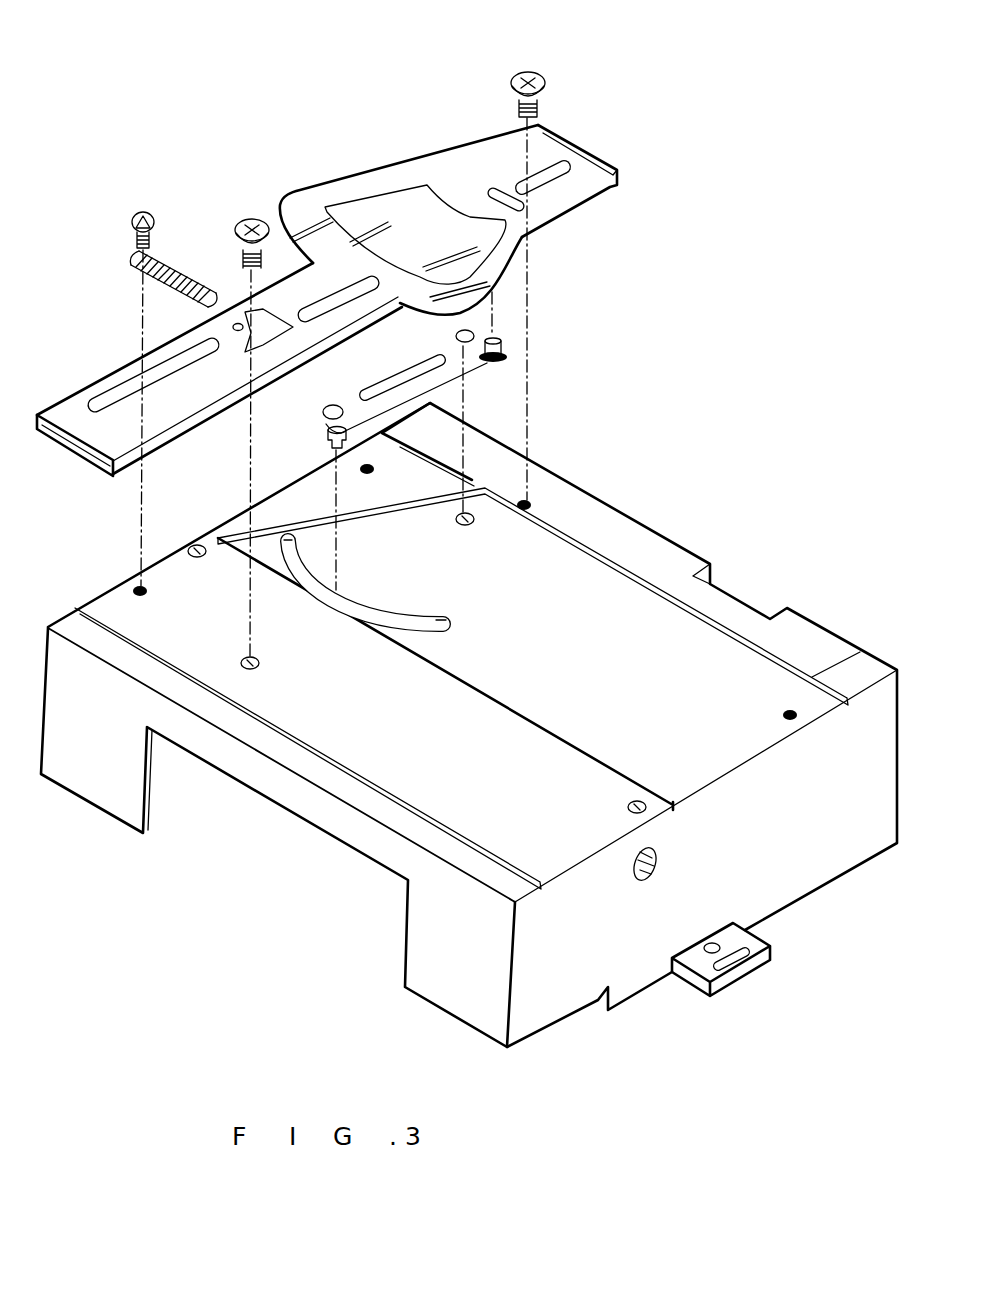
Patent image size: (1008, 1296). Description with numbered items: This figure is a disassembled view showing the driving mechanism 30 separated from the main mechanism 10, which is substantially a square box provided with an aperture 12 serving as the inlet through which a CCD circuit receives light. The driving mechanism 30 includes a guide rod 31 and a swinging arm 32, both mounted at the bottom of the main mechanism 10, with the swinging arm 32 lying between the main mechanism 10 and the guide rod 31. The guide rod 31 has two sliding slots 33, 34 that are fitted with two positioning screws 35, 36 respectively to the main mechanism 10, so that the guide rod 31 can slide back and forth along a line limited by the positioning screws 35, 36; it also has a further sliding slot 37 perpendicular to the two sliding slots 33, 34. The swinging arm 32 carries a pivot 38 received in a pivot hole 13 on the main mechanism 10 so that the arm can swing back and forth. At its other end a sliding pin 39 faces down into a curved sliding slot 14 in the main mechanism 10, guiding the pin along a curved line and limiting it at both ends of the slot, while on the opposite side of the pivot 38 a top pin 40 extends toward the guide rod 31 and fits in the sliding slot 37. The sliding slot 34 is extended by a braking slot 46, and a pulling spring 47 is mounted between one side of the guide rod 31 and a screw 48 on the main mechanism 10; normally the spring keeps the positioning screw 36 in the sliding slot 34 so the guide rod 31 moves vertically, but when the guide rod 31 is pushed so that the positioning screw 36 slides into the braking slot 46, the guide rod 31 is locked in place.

The main mechanism 10 is at (797, 887).
The aperture 12 is at (287, 860).
The pivot hole 13 is at (467, 523).
The curved sliding slot 14 is at (288, 546).
The driving mechanism 30 is at (387, 145).
The guide rod 31 is at (163, 438).
The swinging arm 32 is at (466, 375).
The sliding slot 33 is at (547, 177).
The sliding slot 34 is at (263, 347).
The positioning screw 35 is at (530, 72).
The positioning screw 36 is at (249, 230).
The sliding slot 37 is at (498, 190).
The pivot 38 is at (478, 332).
The sliding pin 39 is at (326, 437).
The top pin 40 is at (506, 352).
The braking slot 46 is at (257, 317).
The pulling spring 47 is at (167, 260).
The screw 48 is at (145, 212).